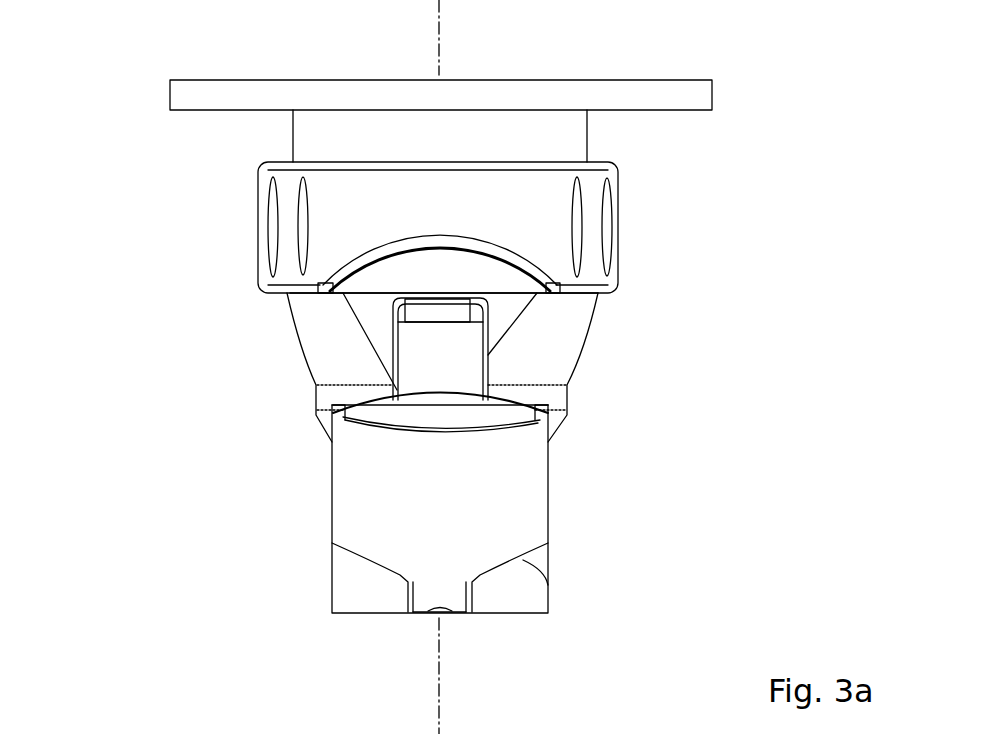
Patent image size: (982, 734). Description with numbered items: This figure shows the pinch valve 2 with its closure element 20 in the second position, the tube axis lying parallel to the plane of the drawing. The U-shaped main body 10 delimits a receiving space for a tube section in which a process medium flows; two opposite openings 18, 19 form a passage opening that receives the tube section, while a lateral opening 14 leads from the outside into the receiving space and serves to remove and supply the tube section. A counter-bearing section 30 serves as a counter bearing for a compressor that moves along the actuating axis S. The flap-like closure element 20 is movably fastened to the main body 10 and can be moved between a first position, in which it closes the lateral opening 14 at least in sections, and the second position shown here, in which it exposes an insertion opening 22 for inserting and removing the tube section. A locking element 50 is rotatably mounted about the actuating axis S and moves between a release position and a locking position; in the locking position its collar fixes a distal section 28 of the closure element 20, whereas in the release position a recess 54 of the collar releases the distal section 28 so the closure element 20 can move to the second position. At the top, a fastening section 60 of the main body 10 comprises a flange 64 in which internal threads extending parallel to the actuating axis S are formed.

The pinch valve 2 is at (400, 328).
The main body 10 is at (530, 600).
The lateral opening 14 is at (434, 291).
The opposite opening 18 is at (305, 393).
The opposite opening 19 is at (578, 381).
The closure element 20 is at (525, 505).
The insertion opening 22 is at (330, 208).
The distal section 28 is at (472, 435).
The counter-bearing section 30 is at (437, 379).
The locking element 50 is at (610, 200).
The recess 54 is at (448, 253).
The fastening section 60 is at (421, 82).
The flange 64 is at (698, 95).
The actuating axis S is at (428, 36).